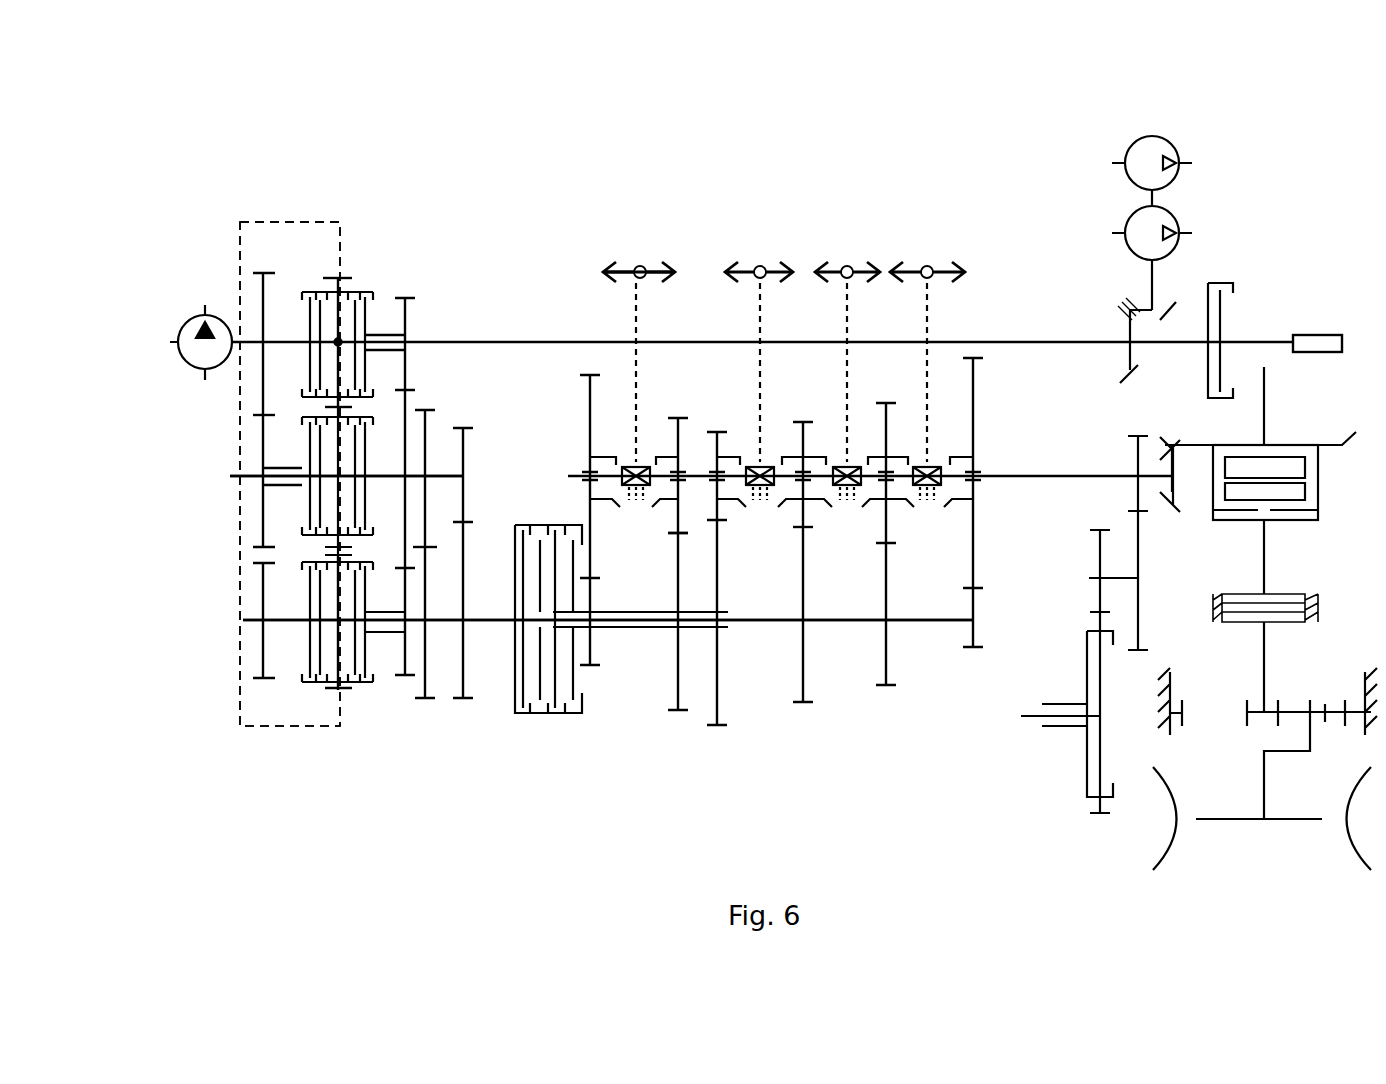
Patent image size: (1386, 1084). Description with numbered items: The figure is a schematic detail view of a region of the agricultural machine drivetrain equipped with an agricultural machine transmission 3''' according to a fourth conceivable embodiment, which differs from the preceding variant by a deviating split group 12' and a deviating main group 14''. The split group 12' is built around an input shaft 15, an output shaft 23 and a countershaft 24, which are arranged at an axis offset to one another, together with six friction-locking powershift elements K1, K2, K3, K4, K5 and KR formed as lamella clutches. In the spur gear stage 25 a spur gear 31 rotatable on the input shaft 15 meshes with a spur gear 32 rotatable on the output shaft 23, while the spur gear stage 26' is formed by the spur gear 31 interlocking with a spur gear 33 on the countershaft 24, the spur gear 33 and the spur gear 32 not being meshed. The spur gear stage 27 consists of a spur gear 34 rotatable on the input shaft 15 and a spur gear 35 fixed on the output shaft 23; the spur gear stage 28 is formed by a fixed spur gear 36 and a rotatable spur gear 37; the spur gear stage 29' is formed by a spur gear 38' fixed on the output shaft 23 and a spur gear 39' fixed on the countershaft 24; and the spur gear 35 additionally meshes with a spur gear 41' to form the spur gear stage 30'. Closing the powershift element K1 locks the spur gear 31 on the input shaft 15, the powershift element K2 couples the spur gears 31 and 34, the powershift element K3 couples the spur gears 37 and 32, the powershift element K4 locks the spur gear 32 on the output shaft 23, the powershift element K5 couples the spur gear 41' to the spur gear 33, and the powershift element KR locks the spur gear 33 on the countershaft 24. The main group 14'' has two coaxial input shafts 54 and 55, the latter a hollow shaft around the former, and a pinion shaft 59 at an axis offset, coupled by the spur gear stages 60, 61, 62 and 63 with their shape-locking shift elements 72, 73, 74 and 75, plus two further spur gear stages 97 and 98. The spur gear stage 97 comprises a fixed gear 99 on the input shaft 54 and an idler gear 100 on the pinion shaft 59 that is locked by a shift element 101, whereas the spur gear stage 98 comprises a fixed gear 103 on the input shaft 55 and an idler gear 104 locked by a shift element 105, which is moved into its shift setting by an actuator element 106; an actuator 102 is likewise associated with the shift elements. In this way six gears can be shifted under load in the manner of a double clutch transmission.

The agricultural machine transmission 3''' is at (261, 151).
The split group 12' is at (337, 183).
The main group 14'' is at (723, 166).
The input shaft 15 is at (175, 338).
The output shaft 23 is at (262, 480).
The countershaft 24 is at (262, 622).
The spur gear stage 25 is at (330, 405).
The spur gear stage 26' is at (276, 525).
The spur gear stage 27 is at (408, 380).
The spur gear stage 28 is at (260, 415).
The spur gear stage 29' is at (472, 661).
The spur gear stage 30' is at (429, 669).
The spur gear 31 is at (340, 275).
The spur gear 32 is at (335, 407).
The spur gear 33 is at (340, 695).
The spur gear 34 is at (410, 298).
The spur gear 35 is at (412, 395).
The spur gear 36 is at (258, 300).
The spur gear 37 is at (258, 540).
The spur gear 38' is at (473, 402).
The spur gear 39' is at (471, 632).
The spur gear 41' is at (409, 718).
The input shaft 54 is at (833, 625).
The input shaft 55 is at (693, 640).
The pinion shaft 59 is at (1025, 470).
The spur gear stage 60 is at (985, 590).
The spur gear stage 61 is at (593, 580).
The spur gear stage 62 is at (890, 544).
The spur gear stage 63 is at (672, 538).
The shift element 72 is at (958, 450).
The shift element 73 is at (605, 450).
The shift element 74 is at (905, 450).
The shift element 75 is at (640, 455).
The spur gear stage 97 is at (805, 528).
The spur gear stage 98 is at (720, 524).
The fixed gear 99 is at (803, 706).
The idler gear 100 is at (768, 460).
The shift element 101 is at (818, 450).
The shift element 102 is at (847, 265).
The fixed gear 103 is at (722, 648).
The idler gear 104 is at (700, 455).
The shift element 105 is at (745, 455).
The actuator element 106 is at (758, 265).
The powershift element K1 is at (318, 300).
The powershift element K2 is at (365, 330).
The powershift element K3 is at (310, 450).
The powershift element K4 is at (400, 452).
The powershift element K5 is at (360, 665).
The powershift element KR is at (305, 660).